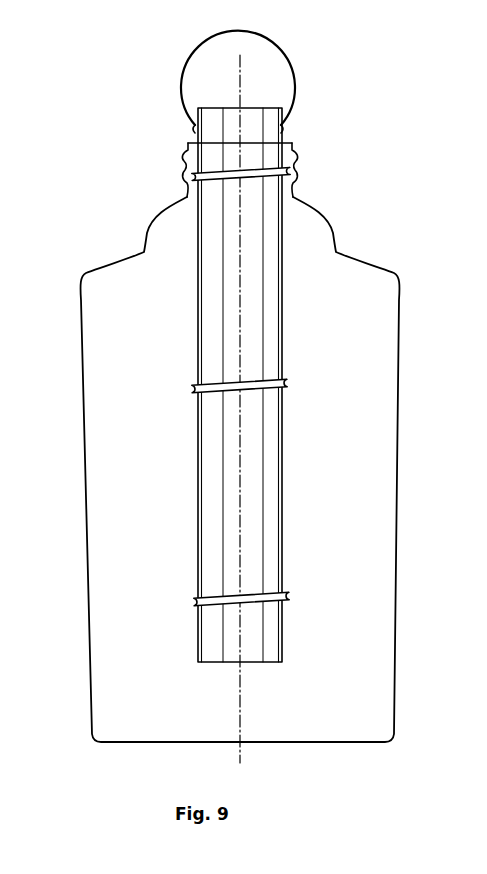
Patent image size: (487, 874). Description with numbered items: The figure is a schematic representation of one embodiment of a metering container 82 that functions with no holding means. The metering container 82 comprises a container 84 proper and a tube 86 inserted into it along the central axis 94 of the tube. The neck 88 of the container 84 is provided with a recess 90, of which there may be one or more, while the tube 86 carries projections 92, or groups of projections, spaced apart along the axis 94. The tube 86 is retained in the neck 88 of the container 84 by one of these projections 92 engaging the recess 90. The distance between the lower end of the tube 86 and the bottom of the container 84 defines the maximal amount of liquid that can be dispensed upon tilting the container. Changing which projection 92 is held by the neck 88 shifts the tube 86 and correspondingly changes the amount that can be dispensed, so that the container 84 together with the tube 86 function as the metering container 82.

The metering container 82 is at (355, 116).
The container 84 is at (399, 422).
The tube 86 is at (198, 198).
The neck 88 is at (300, 168).
The recess 90 is at (292, 185).
The projections 92 is at (192, 173).
The axis 94 is at (251, 87).